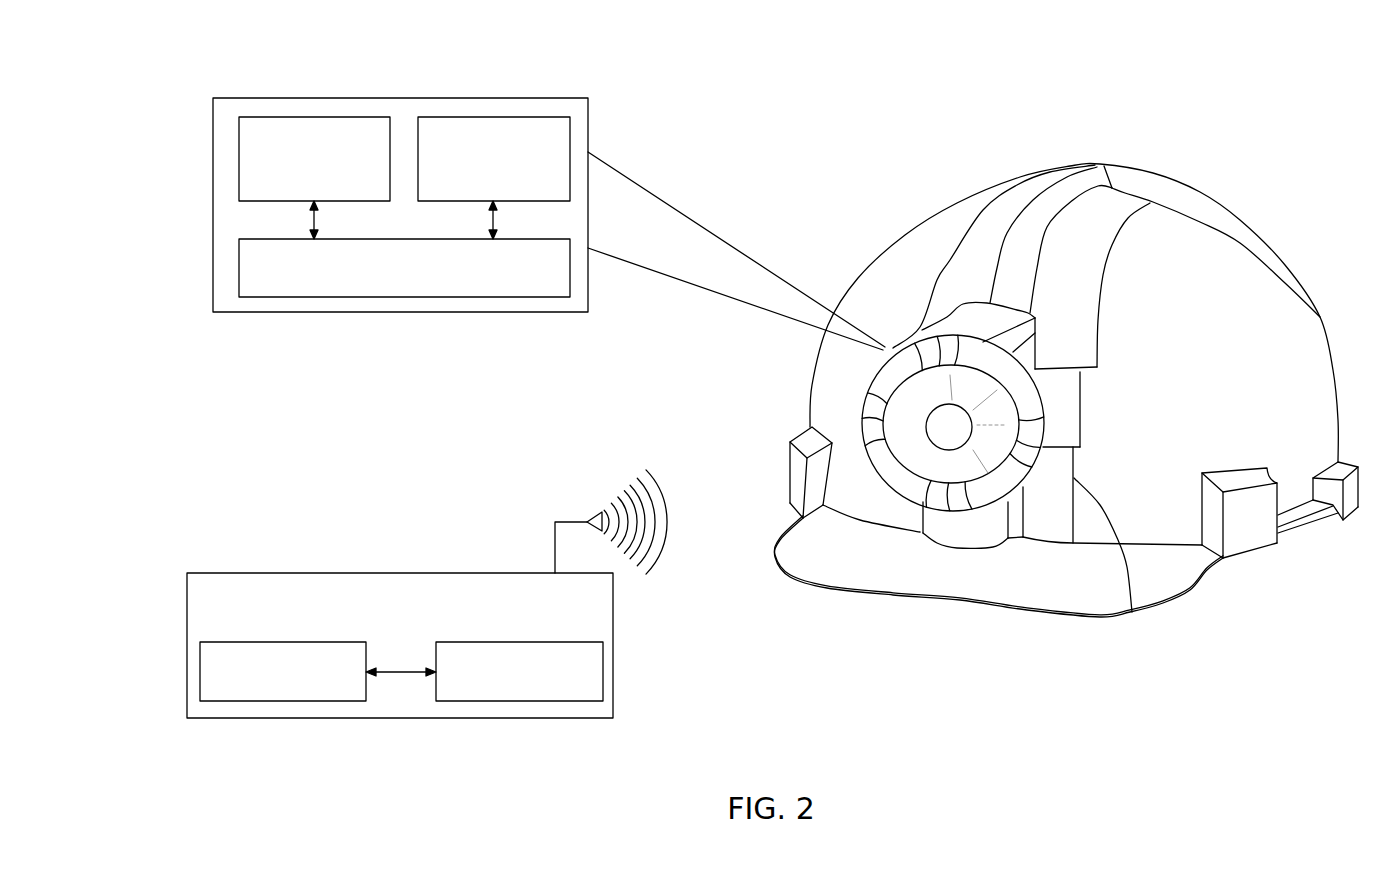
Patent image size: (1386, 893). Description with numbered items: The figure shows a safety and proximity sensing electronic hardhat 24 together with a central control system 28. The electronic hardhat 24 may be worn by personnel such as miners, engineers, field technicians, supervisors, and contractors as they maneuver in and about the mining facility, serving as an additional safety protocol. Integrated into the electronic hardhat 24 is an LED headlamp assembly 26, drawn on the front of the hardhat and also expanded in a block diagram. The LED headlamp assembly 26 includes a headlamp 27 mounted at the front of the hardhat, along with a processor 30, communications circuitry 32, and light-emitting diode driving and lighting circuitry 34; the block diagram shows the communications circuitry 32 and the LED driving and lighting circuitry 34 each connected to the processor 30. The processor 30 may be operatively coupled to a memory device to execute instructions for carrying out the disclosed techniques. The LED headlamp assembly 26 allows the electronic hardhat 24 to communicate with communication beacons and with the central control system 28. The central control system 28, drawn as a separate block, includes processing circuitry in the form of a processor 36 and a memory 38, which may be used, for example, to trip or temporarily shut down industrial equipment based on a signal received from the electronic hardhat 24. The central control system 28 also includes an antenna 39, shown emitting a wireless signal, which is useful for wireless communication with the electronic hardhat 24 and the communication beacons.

The electronic hardhat 24 is at (1175, 188).
The LED headlamp assembly 26 is at (405, 98).
The headlamp 27 is at (1050, 467).
The central control system 28 is at (405, 573).
The processor 30 is at (405, 297).
The communications circuitry 32 is at (313, 117).
The light-emitting diode driving and lighting circuitry 34 is at (493, 117).
The processor 36 is at (200, 673).
The memory 38 is at (603, 668).
The antenna 39 is at (631, 462).